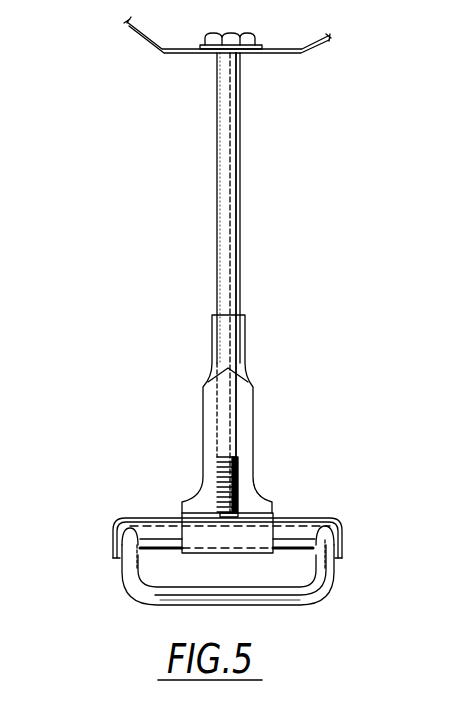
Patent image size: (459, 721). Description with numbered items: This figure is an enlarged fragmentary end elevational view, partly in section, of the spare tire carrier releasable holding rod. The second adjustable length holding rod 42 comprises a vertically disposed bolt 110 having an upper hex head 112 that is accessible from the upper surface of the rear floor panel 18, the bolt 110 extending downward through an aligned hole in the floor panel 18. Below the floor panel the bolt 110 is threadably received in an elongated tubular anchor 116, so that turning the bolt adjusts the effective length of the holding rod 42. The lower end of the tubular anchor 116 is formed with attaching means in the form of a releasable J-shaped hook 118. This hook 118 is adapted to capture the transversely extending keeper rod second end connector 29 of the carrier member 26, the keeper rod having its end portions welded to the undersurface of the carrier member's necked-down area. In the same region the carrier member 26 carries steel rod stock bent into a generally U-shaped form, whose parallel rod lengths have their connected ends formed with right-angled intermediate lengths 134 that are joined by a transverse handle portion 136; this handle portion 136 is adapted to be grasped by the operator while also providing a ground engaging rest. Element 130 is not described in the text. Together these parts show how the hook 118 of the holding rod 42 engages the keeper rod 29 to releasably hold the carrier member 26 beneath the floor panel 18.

The rear floor panel 18 is at (307, 53).
The upper hex head 112 is at (253, 43).
The bolt 110 is at (242, 147).
The second adjustable length holding rod 42 is at (239, 205).
The elongated tubular anchor 116 is at (255, 400).
The keeper rod second end connector 29 is at (163, 533).
The releasable J-shaped hook 118 is at (275, 542).
The carrier member 26 is at (352, 536).
The stirrup bar 130 is at (122, 603).
The right-angled intermediate lengths 134 is at (120, 568).
The transverse handle portion 136 is at (280, 602).